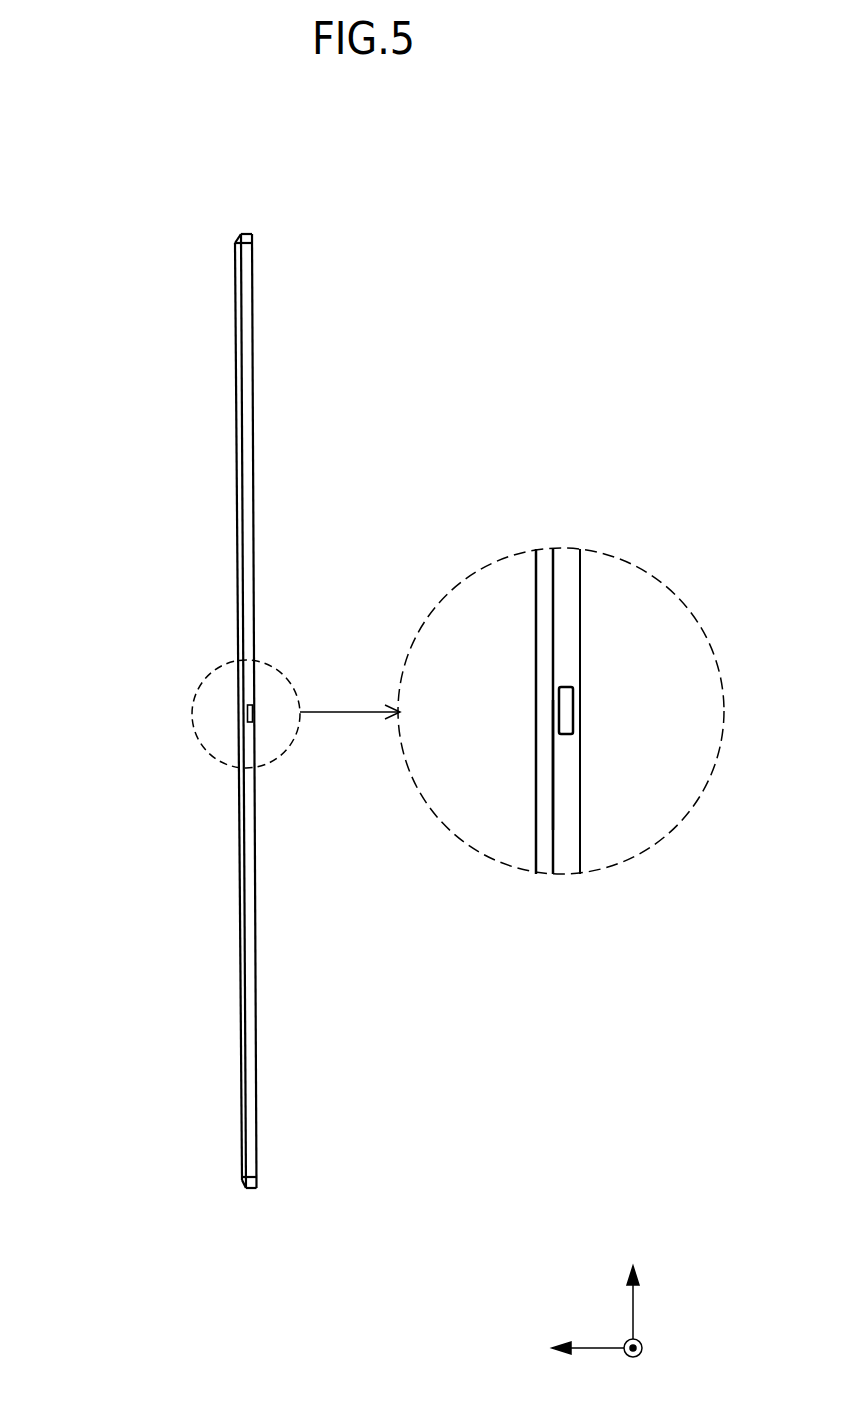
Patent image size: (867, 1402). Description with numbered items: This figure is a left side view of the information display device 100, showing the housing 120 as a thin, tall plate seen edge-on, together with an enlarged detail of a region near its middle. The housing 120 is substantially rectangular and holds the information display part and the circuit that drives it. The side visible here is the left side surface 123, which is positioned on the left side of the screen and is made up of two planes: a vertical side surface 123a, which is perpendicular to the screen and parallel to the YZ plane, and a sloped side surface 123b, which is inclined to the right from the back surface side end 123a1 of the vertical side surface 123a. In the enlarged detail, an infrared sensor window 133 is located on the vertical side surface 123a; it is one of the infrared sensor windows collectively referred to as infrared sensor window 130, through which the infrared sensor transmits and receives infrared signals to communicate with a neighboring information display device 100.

The information display device 100 is at (64, 147).
The housing 120 is at (248, 343).
The left side surface 123 is at (248, 468).
The vertical side surface 123a is at (252, 993).
The back surface side end 123a1 is at (555, 812).
The sloped side surface 123b is at (243, 1022).
The infrared sensor window 130 is at (411, 688).
The infrared sensor window 133 is at (565, 710).